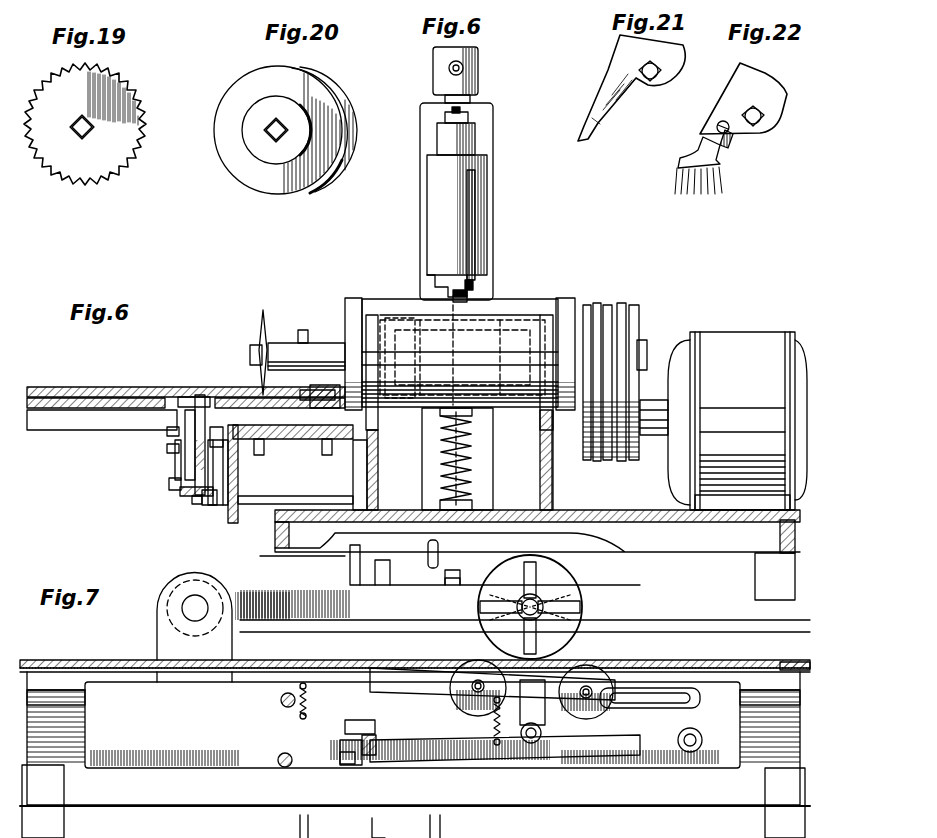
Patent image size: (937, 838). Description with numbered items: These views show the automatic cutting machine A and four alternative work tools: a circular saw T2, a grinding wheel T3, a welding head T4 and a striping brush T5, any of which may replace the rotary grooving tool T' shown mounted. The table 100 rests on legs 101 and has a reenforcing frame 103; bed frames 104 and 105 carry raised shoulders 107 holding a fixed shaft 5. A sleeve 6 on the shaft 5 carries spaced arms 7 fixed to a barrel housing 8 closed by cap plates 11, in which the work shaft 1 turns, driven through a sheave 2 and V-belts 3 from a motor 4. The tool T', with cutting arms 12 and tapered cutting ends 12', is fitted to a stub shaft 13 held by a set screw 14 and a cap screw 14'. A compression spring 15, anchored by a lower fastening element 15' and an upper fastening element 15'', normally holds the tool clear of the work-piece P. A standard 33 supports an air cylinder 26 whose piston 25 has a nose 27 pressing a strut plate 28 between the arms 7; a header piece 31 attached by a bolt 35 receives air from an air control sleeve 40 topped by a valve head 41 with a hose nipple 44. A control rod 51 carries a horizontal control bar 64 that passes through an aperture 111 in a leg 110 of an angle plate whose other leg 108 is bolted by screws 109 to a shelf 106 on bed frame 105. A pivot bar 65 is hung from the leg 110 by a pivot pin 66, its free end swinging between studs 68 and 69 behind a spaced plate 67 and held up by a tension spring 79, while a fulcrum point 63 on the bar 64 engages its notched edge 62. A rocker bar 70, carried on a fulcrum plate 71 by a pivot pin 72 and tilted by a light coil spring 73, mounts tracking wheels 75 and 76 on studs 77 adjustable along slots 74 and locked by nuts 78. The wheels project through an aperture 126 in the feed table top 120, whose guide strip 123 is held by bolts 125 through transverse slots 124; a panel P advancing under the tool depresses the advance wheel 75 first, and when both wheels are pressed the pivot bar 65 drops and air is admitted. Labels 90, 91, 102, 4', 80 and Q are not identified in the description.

In FIG. 19, the circular saw T2 is at (103, 186).
In FIG. 20, the grinding wheel T3 is at (285, 191).
In FIG. 21, the welding head T4 is at (618, 113).
In FIG. 22, the striping brush T5 is at (735, 145).
In FIG. 6, the air hose attaching nipple 44 is at (448, 69).
In FIG. 6, the valve head 41 is at (440, 84).
In FIG. 6, the air control sleeve 40 is at (444, 100).
In FIG. 6, the supporting standard 33 is at (425, 116).
In FIG. 7, the supporting standard 33 is at (380, 565).
In FIG. 6, the attaching bolt 35 is at (470, 118).
In FIG. 6, the header piece 31 is at (470, 142).
In FIG. 6, the air cylinder 26 is at (472, 172).
In FIG. 6, the air piston 25 is at (475, 275).
In FIG. 6, the stop 90 is at (475, 286).
In FIG. 6, the pin 91 is at (470, 294).
In FIG. 6, the nose 27 is at (452, 299).
In FIG. 7, the nose 27 is at (440, 548).
In FIG. 6, the automatic cutting machine A is at (575, 238).
In FIG. 6, the barrel housing 8 is at (530, 310).
In FIG. 6, the cap plate 11 is at (349, 302).
In FIG. 7, the cap plate 11 is at (540, 560).
In FIG. 6, the raised shoulders 107 is at (373, 300).
In FIG. 7, the raised shoulders 107 is at (157, 640).
In FIG. 6, the sleeve 6 is at (390, 300).
In FIG. 7, the sleeve 6 is at (193, 578).
In FIG. 6, the coil compression spring 15 is at (482, 458).
In FIG. 6, the fastening element 15'' is at (485, 416).
In FIG. 6, the fastening element 15' is at (483, 499).
In FIG. 6, the control rod 51 is at (472, 456).
In FIG. 7, the control rod 51 is at (350, 572).
In FIG. 6, the bed frame 104 is at (553, 490).
In FIG. 6, the reenforcing frame 103 is at (278, 540).
In FIG. 7, the reenforcing frame 103 is at (250, 810).
In FIG. 6, the base plate or table 100 is at (650, 540).
In FIG. 6, the leg 102 is at (756, 595).
In FIG. 7, the leg 102 is at (62, 825).
In FIG. 7, the legs 101 is at (766, 826).
In FIG. 6, the fixed shaft 5 is at (590, 310).
In FIG. 7, the fixed shaft 5 is at (182, 608).
In FIG. 6, the V-belts 3 is at (632, 308).
In FIG. 6, the drive pulley or sheave 2 is at (640, 320).
In FIG. 6, the work shaft 1 is at (648, 344).
In FIG. 6, the motor 4 is at (737, 421).
In FIG. 6, the motor shaft 4' is at (648, 447).
In FIG. 6, the cutting arms 12 is at (256, 336).
In FIG. 7, the cutting arms 12 is at (603, 700).
In FIG. 7, the tapered cutting ends 12' is at (551, 711).
In FIG. 6, the set screw 14 is at (274, 324).
In FIG. 6, the cap screw 14' is at (229, 339).
In FIG. 7, the cap screw 14' is at (515, 597).
In FIG. 6, the stub shaft 13 is at (280, 343).
In FIG. 6, the bolts 125 is at (304, 330).
In FIG. 6, the guide strip 123 is at (325, 385).
In FIG. 6, the transverse slots 124 is at (305, 388).
In FIG. 6, the rotary grooving tool T' is at (241, 322).
In FIG. 7, the rotary grooving tool T' is at (586, 573).
In FIG. 6, the cut line Q is at (250, 384).
In FIG. 6, the work-piece P is at (93, 381).
In FIG. 7, the work-piece P is at (738, 641).
In FIG. 6, the feed table top 120 is at (70, 412).
In FIG. 7, the feed table top 120 is at (48, 660).
In FIG. 6, the aperture 126 is at (190, 395).
In FIG. 7, the aperture 126 is at (746, 660).
In FIG. 6, the advance tracking wheel 75 is at (200, 395).
In FIG. 7, the advance tracking wheel 75 is at (620, 650).
In FIG. 7, the following tracking wheel 76 is at (476, 660).
In FIG. 6, the rocker bar 70 is at (185, 420).
In FIG. 7, the rocker bar 70 is at (648, 712).
In FIG. 6, the stud 77 is at (170, 436).
In FIG. 7, the stud 77 is at (592, 712).
In FIG. 6, the lock nut 78 is at (170, 453).
In FIG. 6, the fulcrum plate 71 is at (176, 470).
In FIG. 7, the fulcrum plate 71 is at (546, 725).
In FIG. 6, the pivot pin 72 is at (170, 490).
In FIG. 7, the pivot pin 72 is at (528, 745).
In FIG. 6, the pivot bar 65 is at (190, 497).
In FIG. 7, the pivot bar 65 is at (620, 758).
In FIG. 6, the fulcrum point 63 is at (196, 505).
In FIG. 7, the fulcrum point 63 is at (350, 730).
In FIG. 6, the spaced plate 67 is at (208, 506).
In FIG. 6, the downwardly projecting leg 110 is at (230, 522).
In FIG. 7, the downwardly projecting leg 110 is at (412, 725).
In FIG. 6, the stud 69 is at (223, 429).
In FIG. 7, the stud 69 is at (280, 700).
In FIG. 6, the bolts or screws 109 is at (258, 456).
In FIG. 6, the leg 108 is at (300, 440).
In FIG. 6, the shelf 106 is at (303, 440).
In FIG. 7, the shelf 106 is at (50, 708).
In FIG. 6, the horizontal control bar 64 is at (320, 496).
In FIG. 7, the horizontal control bar 64 is at (355, 771).
In FIG. 6, the pivot pin 66 is at (228, 488).
In FIG. 7, the pivot pin 66 is at (702, 736).
In FIG. 6, the bed frame 105 is at (360, 464).
In FIG. 7, the bed frame 105 is at (413, 735).
In FIG. 7, the spaced arms 7 is at (522, 594).
In FIG. 7, the strut plate 28 is at (452, 574).
In FIG. 7, the elongated slot 74 is at (395, 695).
In FIG. 7, the spring anchor 80 is at (492, 702).
In FIG. 7, the coil spring 73 is at (492, 735).
In FIG. 7, the notched edge 62 is at (378, 740).
In FIG. 7, the aperture 111 is at (340, 770).
In FIG. 7, the stud 68 is at (278, 758).
In FIG. 7, the coil tension spring 79 is at (304, 682).